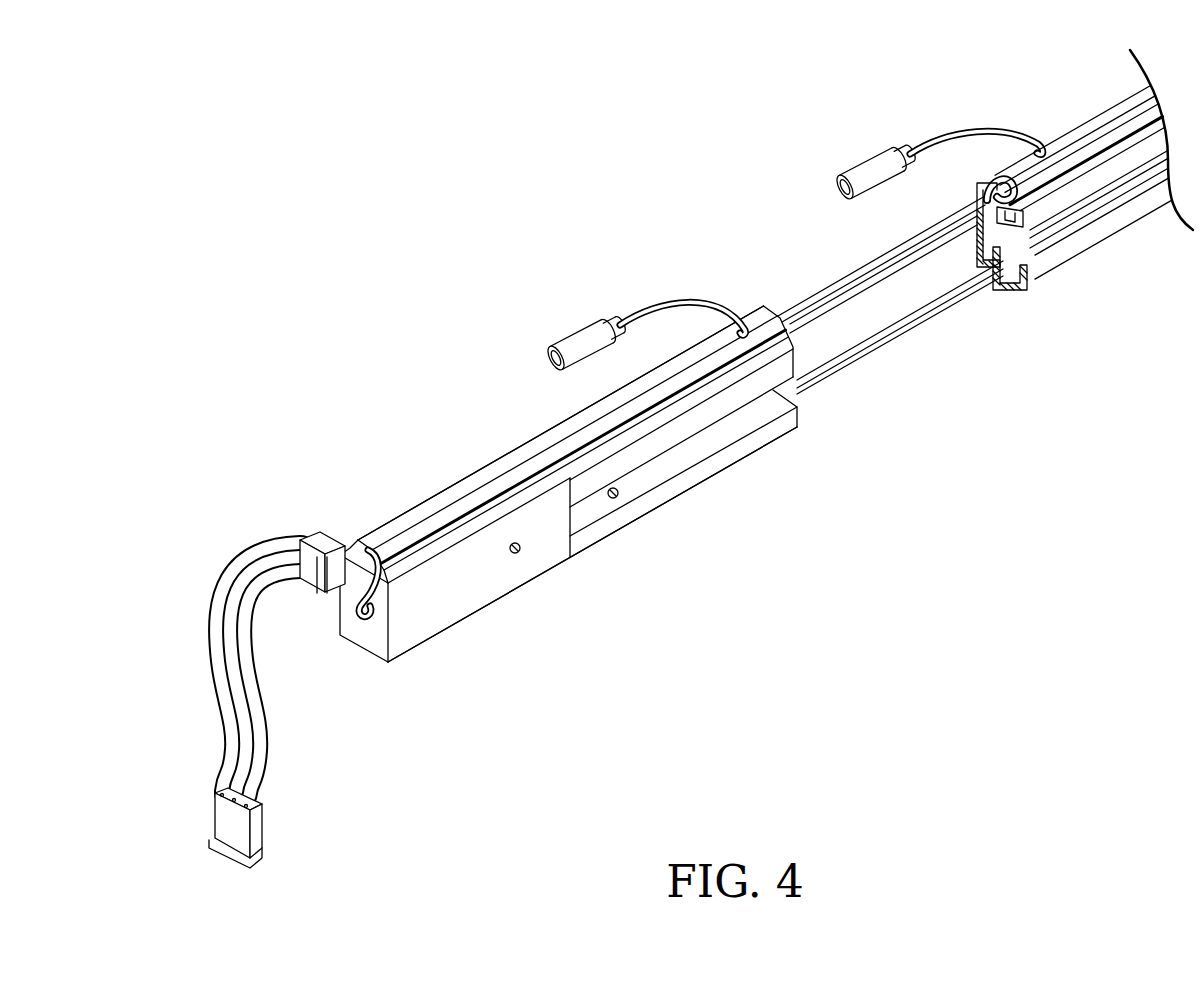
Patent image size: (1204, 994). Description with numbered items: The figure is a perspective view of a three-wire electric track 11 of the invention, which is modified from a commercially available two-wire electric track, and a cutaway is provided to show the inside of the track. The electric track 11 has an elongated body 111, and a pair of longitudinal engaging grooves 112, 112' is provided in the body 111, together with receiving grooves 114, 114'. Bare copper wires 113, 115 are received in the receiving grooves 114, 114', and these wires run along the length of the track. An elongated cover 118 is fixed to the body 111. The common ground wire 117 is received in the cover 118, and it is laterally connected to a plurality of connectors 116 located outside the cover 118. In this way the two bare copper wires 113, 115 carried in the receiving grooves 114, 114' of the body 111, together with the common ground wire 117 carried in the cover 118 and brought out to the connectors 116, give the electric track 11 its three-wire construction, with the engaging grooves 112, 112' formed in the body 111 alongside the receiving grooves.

The electric track 11 is at (627, 152).
The elongated body 111 is at (718, 462).
The longitudinal engaging groove 112 is at (1047, 280).
The longitudinal engaging groove 112' is at (1094, 161).
The bare copper wire 113 is at (832, 367).
The receiving groove 114 is at (1065, 278).
The receiving groove 114' is at (987, 156).
The bare copper wire 115 is at (877, 280).
The connector 116 is at (572, 318).
The common ground wire 117 is at (948, 222).
The elongated cover 118 is at (464, 492).